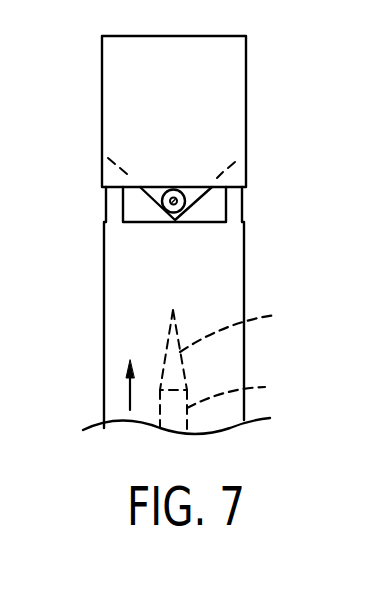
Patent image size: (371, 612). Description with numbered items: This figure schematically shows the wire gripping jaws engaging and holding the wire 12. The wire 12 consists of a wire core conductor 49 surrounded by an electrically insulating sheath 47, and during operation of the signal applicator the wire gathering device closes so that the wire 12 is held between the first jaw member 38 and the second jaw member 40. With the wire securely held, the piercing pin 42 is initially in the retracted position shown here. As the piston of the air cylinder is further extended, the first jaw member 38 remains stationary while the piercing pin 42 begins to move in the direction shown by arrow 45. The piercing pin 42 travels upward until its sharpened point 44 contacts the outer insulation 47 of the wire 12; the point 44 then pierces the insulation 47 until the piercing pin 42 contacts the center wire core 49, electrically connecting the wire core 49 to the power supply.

The wire 12 is at (184, 191).
The first jaw member 38 is at (244, 246).
The second jaw member 40 is at (246, 90).
The piercing pin 42 is at (231, 370).
The point 44 is at (245, 328).
The arrow 45 is at (128, 392).
The electrically insulating sheath 47 is at (162, 200).
The wire core conductor 49 is at (173, 190).